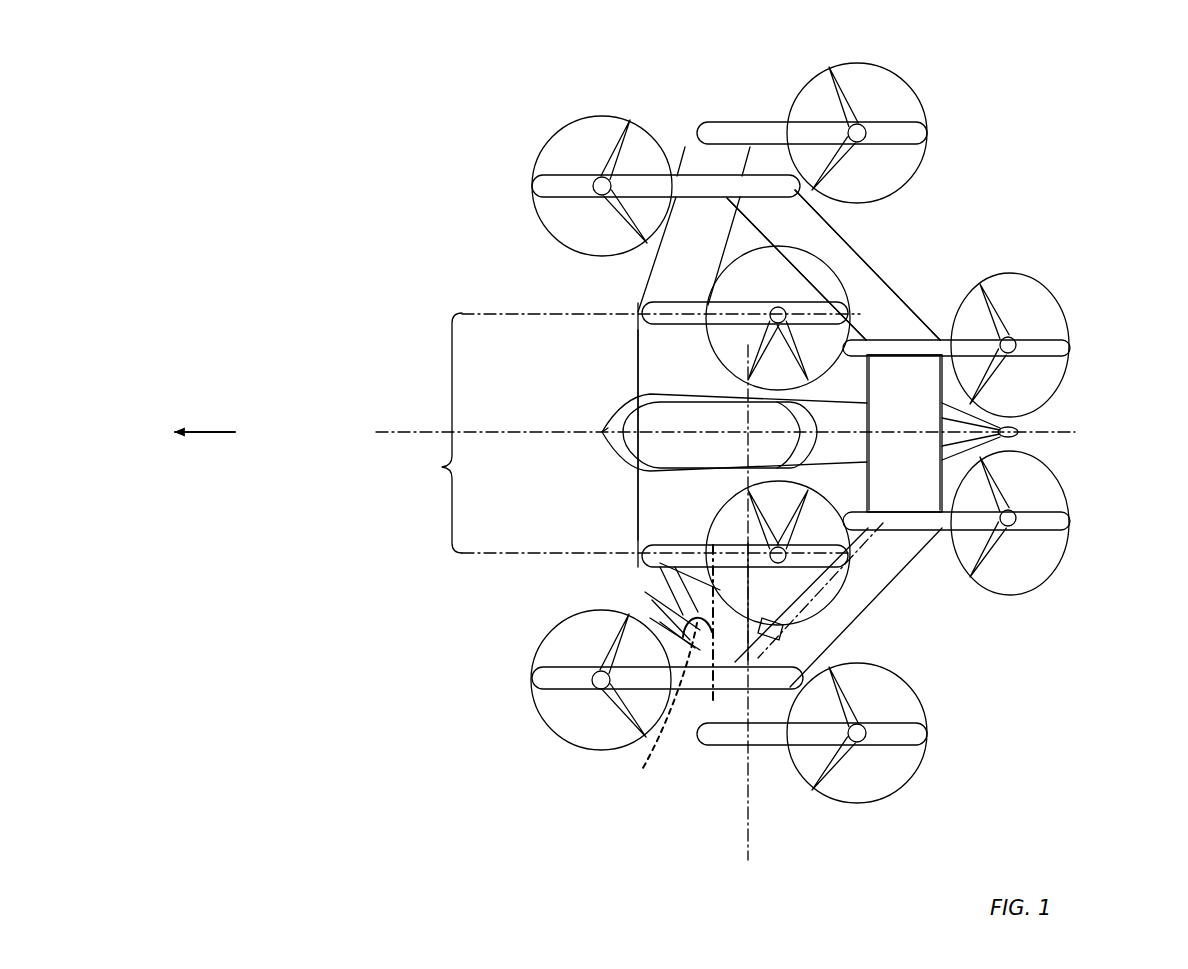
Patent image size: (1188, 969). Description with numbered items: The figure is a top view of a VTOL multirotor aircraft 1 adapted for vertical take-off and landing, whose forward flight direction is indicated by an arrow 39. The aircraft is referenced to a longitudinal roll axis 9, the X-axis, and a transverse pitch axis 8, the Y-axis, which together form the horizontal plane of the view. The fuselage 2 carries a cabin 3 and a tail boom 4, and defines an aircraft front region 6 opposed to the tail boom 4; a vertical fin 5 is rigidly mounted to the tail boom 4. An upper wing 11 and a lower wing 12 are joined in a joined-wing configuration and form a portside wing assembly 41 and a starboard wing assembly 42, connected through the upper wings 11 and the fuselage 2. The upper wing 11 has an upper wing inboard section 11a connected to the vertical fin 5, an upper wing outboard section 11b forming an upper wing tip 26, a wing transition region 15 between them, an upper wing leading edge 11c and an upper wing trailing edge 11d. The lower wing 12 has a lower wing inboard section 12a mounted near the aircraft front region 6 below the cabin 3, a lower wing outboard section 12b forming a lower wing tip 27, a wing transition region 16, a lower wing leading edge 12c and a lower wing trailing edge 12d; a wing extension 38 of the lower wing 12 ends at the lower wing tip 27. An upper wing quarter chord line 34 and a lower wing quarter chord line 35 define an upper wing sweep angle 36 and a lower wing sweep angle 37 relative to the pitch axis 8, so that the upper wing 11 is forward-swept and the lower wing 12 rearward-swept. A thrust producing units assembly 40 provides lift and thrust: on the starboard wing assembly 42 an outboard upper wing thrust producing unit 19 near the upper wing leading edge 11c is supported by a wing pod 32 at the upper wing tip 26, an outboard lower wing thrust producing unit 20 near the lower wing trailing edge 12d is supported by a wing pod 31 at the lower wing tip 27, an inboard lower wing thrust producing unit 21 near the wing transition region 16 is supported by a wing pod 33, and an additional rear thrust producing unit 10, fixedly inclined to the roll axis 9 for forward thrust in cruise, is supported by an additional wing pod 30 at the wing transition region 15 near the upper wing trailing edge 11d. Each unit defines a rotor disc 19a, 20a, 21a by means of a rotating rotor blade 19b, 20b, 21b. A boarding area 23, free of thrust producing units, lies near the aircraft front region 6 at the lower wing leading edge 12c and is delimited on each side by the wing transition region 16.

The VTOL multirotor aircraft 1 is at (1073, 121).
The fuselage 2 is at (605, 440).
The cabin 3 is at (645, 415).
The tail boom 4 is at (990, 436).
The vertical fin 5 is at (1000, 440).
The aircraft front region 6 is at (601, 432).
The pitch axis 8 is at (748, 860).
The roll axis 9 is at (400, 432).
The additional rear thrust producing unit 10 is at (1074, 505).
The upper wing 11 is at (815, 232).
The upper wing inboard section 11a is at (921, 393).
The upper wing outboard section 11b is at (852, 258).
The upper wing leading edge 11c is at (787, 268).
The upper wing trailing edge 11d is at (933, 336).
The lower wing 12 is at (673, 273).
The lower wing inboard section 12a is at (645, 380).
The lower wing outboard section 12b is at (657, 293).
The lower wing leading edge 12c is at (656, 626).
The lower wing trailing edge 12d is at (755, 640).
The wing transition region 15 is at (889, 508).
The wing transition region 16 is at (640, 556).
The outboard upper wing thrust producing unit 19 is at (522, 715).
The rotor disc 19a is at (553, 733).
The rotor blade 19b is at (548, 682).
The outboard lower wing thrust producing unit 20 is at (906, 803).
The rotor disc 20a is at (927, 753).
The rotor blade 20b is at (907, 732).
The inboard lower wing thrust producing unit 21 is at (727, 575).
The rotor disc 21a is at (640, 560).
The rotor blade 21b is at (641, 592).
The boarding area 23 is at (632, 433).
The upper wing tip 26 is at (764, 170).
The lower wing tip 27 is at (763, 118).
The additional wing pod 30 is at (981, 525).
The wing pod 31 is at (776, 735).
The wing pod 32 is at (622, 683).
The wing pod 33 is at (683, 317).
The upper wing quarter chord line 34 is at (842, 550).
The lower wing quarter chord line 35 is at (650, 703).
The upper wing sweep angle 36 is at (790, 620).
The lower wing sweep angle 37 is at (650, 618).
The wing extension 38 is at (705, 153).
The arrow 39 is at (218, 432).
The thrust producing units assembly 40 is at (907, 64).
The portside wing assembly 41 is at (655, 253).
The starboard wing assembly 42 is at (735, 632).